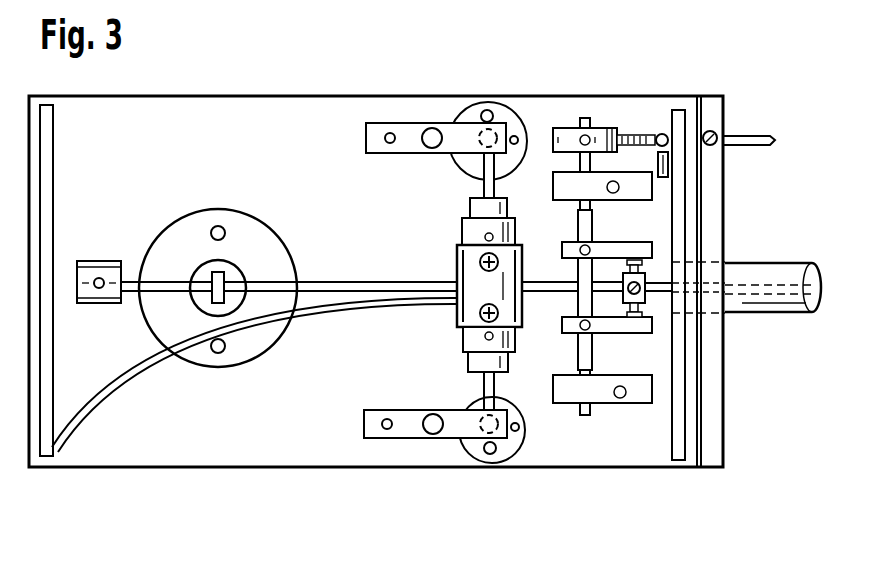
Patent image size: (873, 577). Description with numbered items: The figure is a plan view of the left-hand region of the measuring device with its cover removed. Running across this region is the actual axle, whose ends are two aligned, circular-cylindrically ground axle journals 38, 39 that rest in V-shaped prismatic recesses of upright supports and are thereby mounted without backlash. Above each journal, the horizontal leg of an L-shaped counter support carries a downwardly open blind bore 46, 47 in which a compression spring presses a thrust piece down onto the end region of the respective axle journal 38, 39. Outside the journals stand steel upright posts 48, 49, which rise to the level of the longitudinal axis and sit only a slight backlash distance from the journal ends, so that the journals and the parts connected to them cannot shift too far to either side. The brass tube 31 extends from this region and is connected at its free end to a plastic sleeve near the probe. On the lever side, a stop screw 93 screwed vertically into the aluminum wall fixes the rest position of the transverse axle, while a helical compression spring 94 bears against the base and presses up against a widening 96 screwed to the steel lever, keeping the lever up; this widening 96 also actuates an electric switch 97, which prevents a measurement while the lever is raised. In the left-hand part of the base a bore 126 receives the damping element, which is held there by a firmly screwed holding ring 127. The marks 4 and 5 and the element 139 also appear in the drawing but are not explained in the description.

The brass tube 31 is at (787, 272).
The axle journal 38 is at (507, 186).
The axle journal 39 is at (497, 385).
The blind bore 46 is at (493, 112).
The blind bore 47 is at (459, 440).
The upright post 48 is at (481, 108).
The upright post 49 is at (494, 451).
The stop screw 93 is at (714, 136).
The helical compression spring 94 is at (663, 133).
The widening 96 is at (656, 135).
The electric switch 97 is at (673, 164).
The bore 126 is at (235, 272).
The holding ring 127 is at (262, 235).
The coupling 139 is at (690, 282).
The viewing direction arrow 4 is at (832, 360).
The viewing direction arrow 5 is at (612, 18).